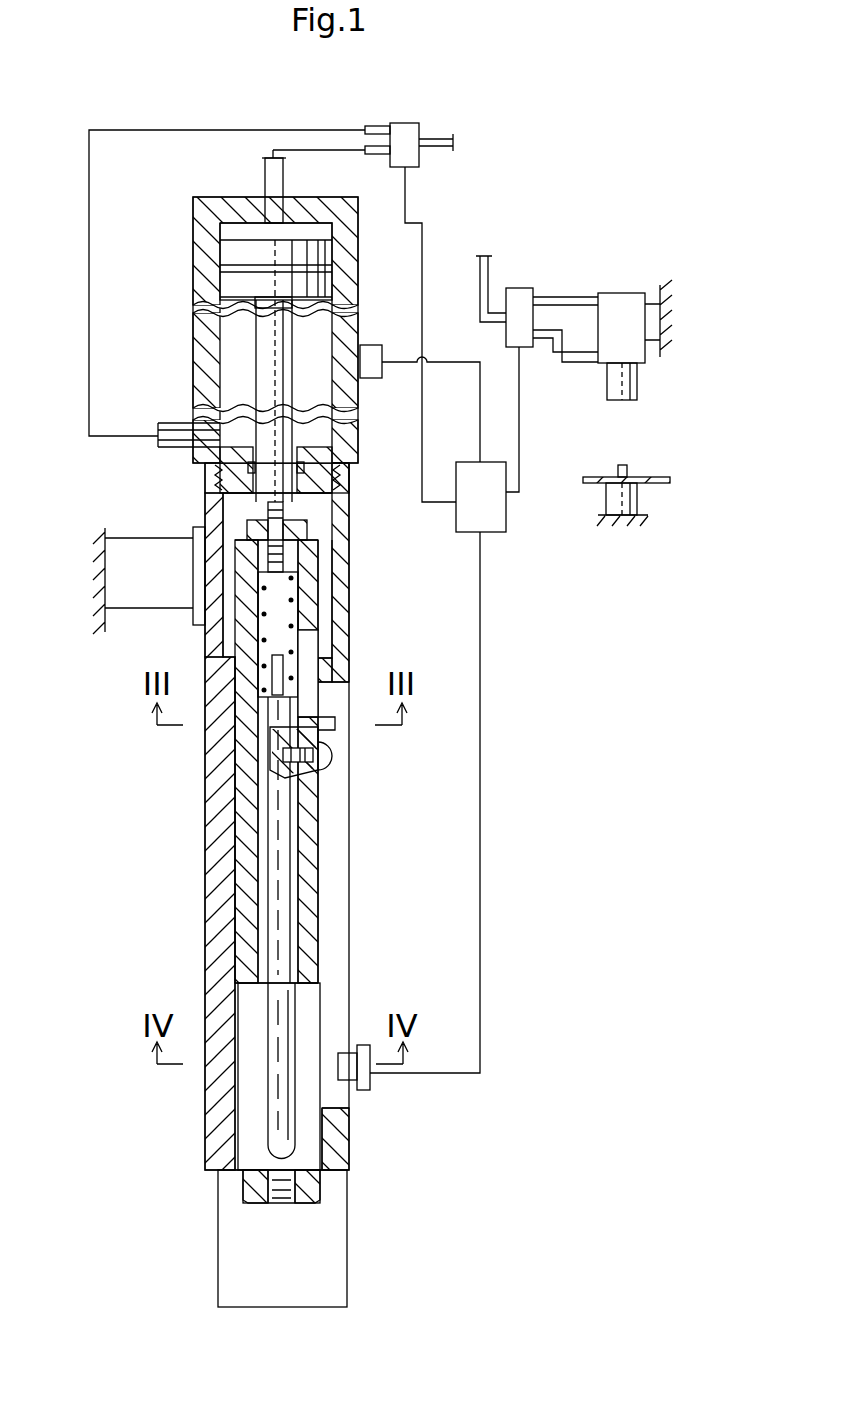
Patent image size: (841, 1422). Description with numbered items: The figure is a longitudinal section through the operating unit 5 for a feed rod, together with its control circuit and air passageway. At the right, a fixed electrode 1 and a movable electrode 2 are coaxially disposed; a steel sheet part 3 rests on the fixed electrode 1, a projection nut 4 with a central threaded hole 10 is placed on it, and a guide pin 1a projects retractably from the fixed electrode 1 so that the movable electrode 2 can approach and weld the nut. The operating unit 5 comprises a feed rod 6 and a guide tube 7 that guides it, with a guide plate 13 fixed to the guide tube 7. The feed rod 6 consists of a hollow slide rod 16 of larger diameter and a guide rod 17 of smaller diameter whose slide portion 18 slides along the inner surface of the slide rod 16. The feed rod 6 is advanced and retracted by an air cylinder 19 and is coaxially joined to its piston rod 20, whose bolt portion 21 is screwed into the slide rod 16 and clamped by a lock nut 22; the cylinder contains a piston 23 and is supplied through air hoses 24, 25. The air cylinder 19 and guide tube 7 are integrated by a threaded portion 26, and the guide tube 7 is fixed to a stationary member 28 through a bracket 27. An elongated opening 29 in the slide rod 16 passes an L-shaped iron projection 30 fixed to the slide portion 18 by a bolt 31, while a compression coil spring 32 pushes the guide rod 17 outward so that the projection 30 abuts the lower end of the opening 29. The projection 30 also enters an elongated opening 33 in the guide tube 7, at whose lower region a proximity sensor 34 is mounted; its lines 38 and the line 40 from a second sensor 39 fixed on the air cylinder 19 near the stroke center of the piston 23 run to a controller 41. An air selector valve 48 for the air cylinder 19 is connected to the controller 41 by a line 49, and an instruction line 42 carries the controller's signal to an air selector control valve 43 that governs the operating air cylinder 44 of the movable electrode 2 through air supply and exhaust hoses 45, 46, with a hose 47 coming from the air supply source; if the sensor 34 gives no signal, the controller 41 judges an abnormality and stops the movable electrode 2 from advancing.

The fixed electrode 1 is at (640, 505).
The guide pin 1a is at (625, 467).
The movable electrode 2 is at (637, 383).
The steel sheet part 3 is at (652, 475).
The projection nut 4 is at (320, 1188).
The operating unit 5 is at (376, 924).
The feed rod 6 is at (218, 936).
The guide tube 7 is at (205, 772).
The threaded hole 10 is at (272, 1203).
The guide plate 13 is at (347, 1265).
The slide rod 16 is at (242, 832).
The guide rod 17 is at (268, 1095).
The slide portion 18 is at (265, 873).
The air cylinder 19 is at (195, 318).
The piston rod 20 is at (254, 377).
The bolt portion 21 is at (304, 526).
The lock nut 22 is at (260, 514).
The piston 23 is at (230, 251).
The air hose 24 is at (262, 173).
The air hose 25 is at (366, 128).
The threaded portion 26 is at (340, 478).
The bracket 27 is at (115, 536).
The stationary member 28 is at (124, 615).
The elongated opening 29 is at (313, 700).
The projection 30 is at (338, 727).
The bolt 31 is at (327, 757).
The compression coil spring 32 is at (300, 605).
The elongated opening 33 is at (345, 855).
The sensor 34 is at (353, 1050).
The lines 38 is at (483, 950).
The sensor 39 is at (375, 345).
The line 40 is at (398, 364).
The controller 41 is at (481, 497).
The instruction line 42 is at (520, 437).
The air selector control valve 43 is at (516, 288).
The operating air cylinder 44 is at (610, 290).
The air supply and exhaust hose 45 is at (566, 295).
The air supply and exhaust hose 46 is at (572, 362).
The hose 47 is at (436, 140).
The air selector valve 48 is at (420, 160).
The line 49 is at (428, 240).